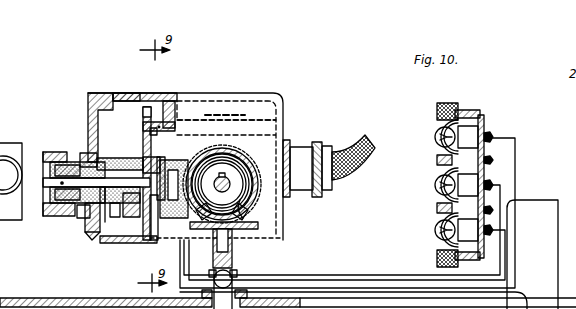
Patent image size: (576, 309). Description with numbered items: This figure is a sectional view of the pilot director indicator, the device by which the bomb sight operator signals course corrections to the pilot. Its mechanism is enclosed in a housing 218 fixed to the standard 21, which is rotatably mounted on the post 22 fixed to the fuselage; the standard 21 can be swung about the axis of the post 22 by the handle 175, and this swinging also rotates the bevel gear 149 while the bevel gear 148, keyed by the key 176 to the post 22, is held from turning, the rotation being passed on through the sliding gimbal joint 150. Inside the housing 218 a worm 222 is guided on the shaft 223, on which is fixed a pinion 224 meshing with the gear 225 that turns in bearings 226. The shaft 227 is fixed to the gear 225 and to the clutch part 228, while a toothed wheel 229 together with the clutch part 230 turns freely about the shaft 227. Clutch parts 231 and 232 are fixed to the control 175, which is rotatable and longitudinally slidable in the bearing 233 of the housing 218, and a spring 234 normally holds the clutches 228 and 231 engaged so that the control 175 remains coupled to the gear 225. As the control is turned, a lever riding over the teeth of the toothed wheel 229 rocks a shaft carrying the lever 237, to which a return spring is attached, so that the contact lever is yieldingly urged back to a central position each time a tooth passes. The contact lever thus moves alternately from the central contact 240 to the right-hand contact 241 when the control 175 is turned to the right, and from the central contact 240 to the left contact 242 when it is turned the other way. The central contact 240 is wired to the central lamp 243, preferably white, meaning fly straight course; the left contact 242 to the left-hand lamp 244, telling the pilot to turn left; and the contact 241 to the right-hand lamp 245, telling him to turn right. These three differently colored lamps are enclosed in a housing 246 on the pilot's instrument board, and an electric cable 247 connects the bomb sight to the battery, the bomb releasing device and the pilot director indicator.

The standard 21 is at (283, 97).
The post 22 is at (241, 201).
The bevel gear 148 is at (231, 190).
The bevel gear 149 is at (265, 239).
The sliding gimbal joint 150 is at (233, 259).
The handle 175 is at (68, 216).
The key 176 is at (251, 154).
The housing 218 is at (107, 222).
The worm 222 is at (228, 115).
The shaft 223 is at (184, 165).
The pinion 224 is at (135, 100).
The gear 225 is at (143, 151).
The bearings 226 is at (147, 238).
The shaft 227 is at (44, 216).
The clutch part 228 is at (43, 167).
The toothed wheel 229 is at (116, 228).
The clutch part 230 is at (92, 240).
The clutch part 231 is at (90, 218).
The clutch part 232 is at (95, 232).
The bearing 233 is at (80, 160).
The spring 234 is at (85, 152).
The lever 237 is at (11, 174).
The central contact 240 is at (181, 166).
The right-hand contact 241 is at (156, 242).
The left contact 242 is at (177, 168).
The central lamp 243 is at (435, 185).
The left-hand lamp 244 is at (435, 137).
The right-hand lamp 245 is at (435, 231).
The housing 246 is at (487, 171).
The electric cable 247 is at (347, 182).